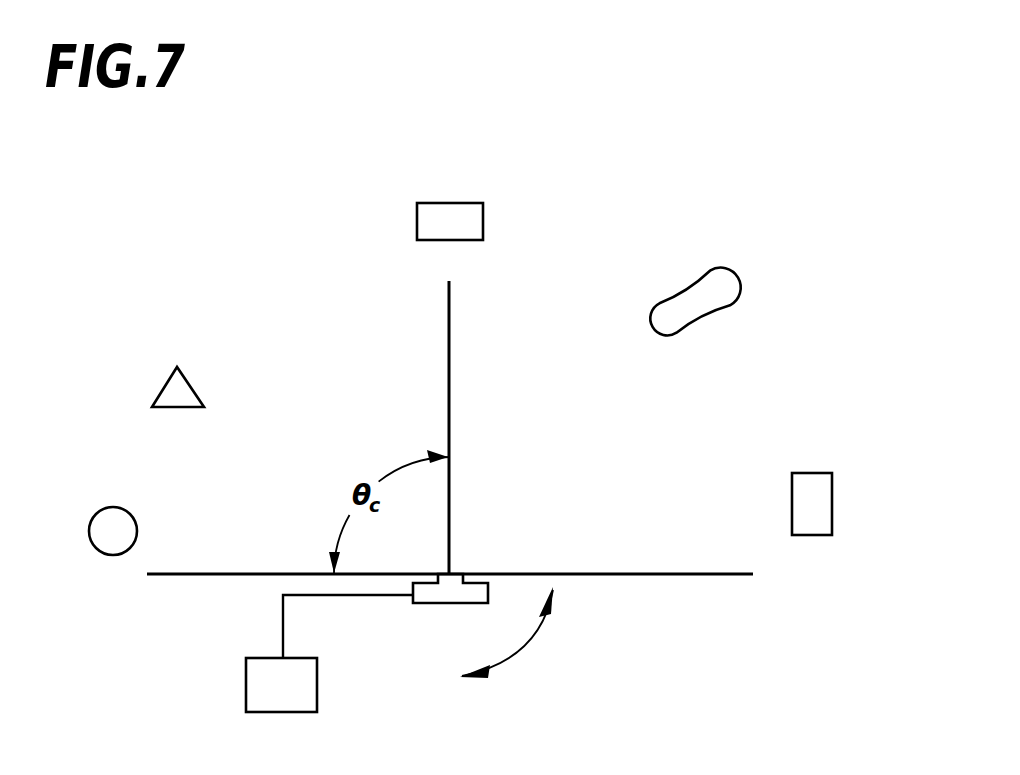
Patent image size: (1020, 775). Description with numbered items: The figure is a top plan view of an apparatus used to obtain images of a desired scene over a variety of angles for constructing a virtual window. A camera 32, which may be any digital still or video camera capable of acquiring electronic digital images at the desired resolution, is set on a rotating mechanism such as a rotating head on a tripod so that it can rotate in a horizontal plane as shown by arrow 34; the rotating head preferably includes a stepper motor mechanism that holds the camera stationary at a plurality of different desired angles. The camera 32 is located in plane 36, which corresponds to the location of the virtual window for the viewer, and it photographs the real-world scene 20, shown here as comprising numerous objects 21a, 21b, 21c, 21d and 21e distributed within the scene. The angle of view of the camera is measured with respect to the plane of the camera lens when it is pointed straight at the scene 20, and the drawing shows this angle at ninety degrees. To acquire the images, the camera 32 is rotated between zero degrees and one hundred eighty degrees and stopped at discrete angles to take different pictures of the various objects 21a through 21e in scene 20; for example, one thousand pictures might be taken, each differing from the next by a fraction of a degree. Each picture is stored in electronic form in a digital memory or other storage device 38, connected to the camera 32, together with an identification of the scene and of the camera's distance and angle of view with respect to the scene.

The scene 20 is at (815, 283).
The object 21a is at (110, 518).
The object 21b is at (165, 395).
The object 21c is at (417, 222).
The object 21d is at (683, 295).
The object 21e is at (812, 482).
The camera 32 is at (432, 604).
The arrow 34 is at (527, 648).
The plane 36 is at (648, 574).
The storage device 38 is at (299, 699).